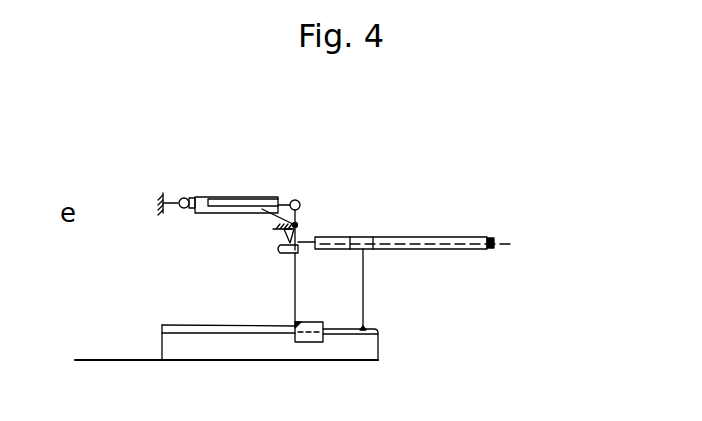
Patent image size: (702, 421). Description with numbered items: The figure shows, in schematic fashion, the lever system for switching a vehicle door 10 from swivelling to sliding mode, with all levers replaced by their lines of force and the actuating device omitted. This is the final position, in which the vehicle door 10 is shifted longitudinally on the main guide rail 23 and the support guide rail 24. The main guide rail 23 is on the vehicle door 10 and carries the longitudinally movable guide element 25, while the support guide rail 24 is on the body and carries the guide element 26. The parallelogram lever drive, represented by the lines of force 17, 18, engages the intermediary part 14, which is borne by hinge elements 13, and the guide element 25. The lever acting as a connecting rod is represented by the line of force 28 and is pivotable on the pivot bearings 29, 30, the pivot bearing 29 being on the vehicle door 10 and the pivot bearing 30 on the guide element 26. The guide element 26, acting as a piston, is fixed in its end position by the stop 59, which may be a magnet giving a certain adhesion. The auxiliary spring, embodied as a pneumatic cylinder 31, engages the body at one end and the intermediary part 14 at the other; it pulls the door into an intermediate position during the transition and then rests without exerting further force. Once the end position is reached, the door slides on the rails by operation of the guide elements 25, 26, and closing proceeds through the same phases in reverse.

The vehicle door 10 is at (350, 352).
The hinge elements 13 is at (303, 240).
The intermediary part 14 is at (255, 197).
The line of force 17 is at (293, 272).
The line of force 18 is at (218, 287).
The main guide rail 23 is at (190, 330).
The support guide rail 24 is at (332, 237).
The guide element 25 is at (313, 322).
The guide element 26 is at (358, 237).
The line of force 28 is at (365, 303).
The pivot bearing 29 is at (366, 318).
The pivot bearing 30 is at (370, 237).
The pneumatic cylinder 31 is at (211, 197).
The stop 59 is at (490, 237).